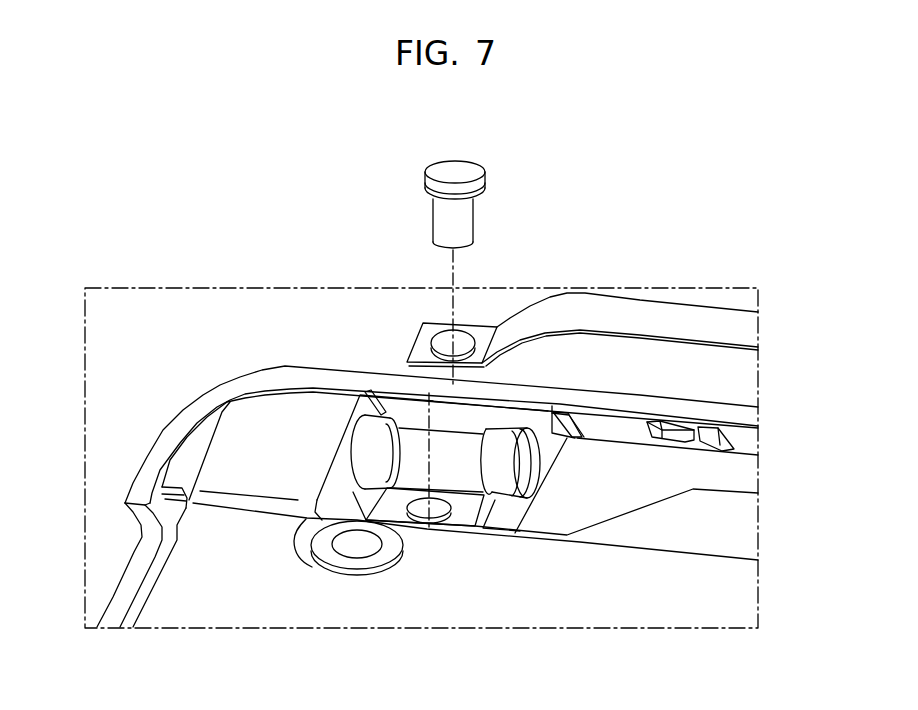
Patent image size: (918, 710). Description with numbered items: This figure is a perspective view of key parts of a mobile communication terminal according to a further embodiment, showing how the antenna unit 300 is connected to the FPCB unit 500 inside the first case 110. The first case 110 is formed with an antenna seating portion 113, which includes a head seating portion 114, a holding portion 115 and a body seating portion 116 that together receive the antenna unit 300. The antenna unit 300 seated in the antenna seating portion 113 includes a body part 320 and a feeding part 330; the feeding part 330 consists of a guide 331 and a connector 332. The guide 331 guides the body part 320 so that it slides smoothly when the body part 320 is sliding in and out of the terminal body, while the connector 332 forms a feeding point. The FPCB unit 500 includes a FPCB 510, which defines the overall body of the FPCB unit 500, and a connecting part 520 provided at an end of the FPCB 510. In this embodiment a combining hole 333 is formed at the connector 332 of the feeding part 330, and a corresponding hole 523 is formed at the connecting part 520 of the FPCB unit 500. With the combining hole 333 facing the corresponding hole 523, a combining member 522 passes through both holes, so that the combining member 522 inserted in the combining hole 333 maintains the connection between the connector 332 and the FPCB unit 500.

The first case 110 is at (440, 476).
The antenna seating portion 113 is at (603, 412).
The head seating portion 114 is at (262, 447).
The holding portion 115 is at (475, 417).
The body seating portion 116 is at (740, 437).
The antenna unit 300 is at (340, 510).
The body part 320 is at (536, 476).
The feeding part 330 is at (394, 395).
The guide 331 is at (500, 483).
The connector 332 is at (460, 520).
The combining hole 333 is at (429, 538).
The FPCB unit 500 is at (557, 233).
The FPCB 510 is at (603, 308).
The connecting part 520 is at (442, 286).
The combining member 522 is at (455, 168).
The corresponding hole 523 is at (461, 345).